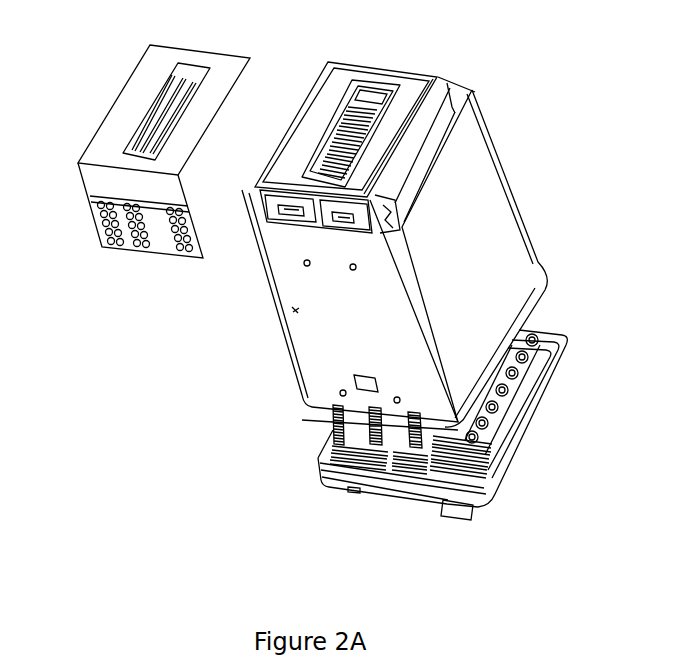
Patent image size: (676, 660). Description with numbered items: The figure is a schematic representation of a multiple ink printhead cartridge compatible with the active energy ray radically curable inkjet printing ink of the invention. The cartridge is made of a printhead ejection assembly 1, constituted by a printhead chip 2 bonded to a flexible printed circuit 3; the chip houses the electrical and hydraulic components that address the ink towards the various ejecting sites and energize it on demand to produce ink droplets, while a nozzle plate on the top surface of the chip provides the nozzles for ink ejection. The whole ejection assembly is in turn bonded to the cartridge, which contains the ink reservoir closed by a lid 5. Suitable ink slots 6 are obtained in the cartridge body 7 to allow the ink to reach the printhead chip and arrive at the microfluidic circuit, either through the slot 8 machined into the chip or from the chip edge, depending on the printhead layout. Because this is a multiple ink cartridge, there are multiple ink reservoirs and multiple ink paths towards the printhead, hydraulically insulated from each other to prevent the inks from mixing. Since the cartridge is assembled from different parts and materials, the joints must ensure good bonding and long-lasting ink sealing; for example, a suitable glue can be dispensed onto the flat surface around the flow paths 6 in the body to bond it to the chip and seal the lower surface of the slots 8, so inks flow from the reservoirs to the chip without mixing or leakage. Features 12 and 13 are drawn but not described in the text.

The printhead ejection assembly 1 is at (98, 247).
The printhead chip 2 is at (178, 62).
The flexible printed circuit 3 is at (93, 217).
The lid 5 is at (507, 433).
The ink slot 6 is at (322, 137).
The cartridge body 7 is at (450, 88).
The slot 8 is at (140, 122).
The front panel 12 is at (295, 310).
The ports 13 is at (292, 223).